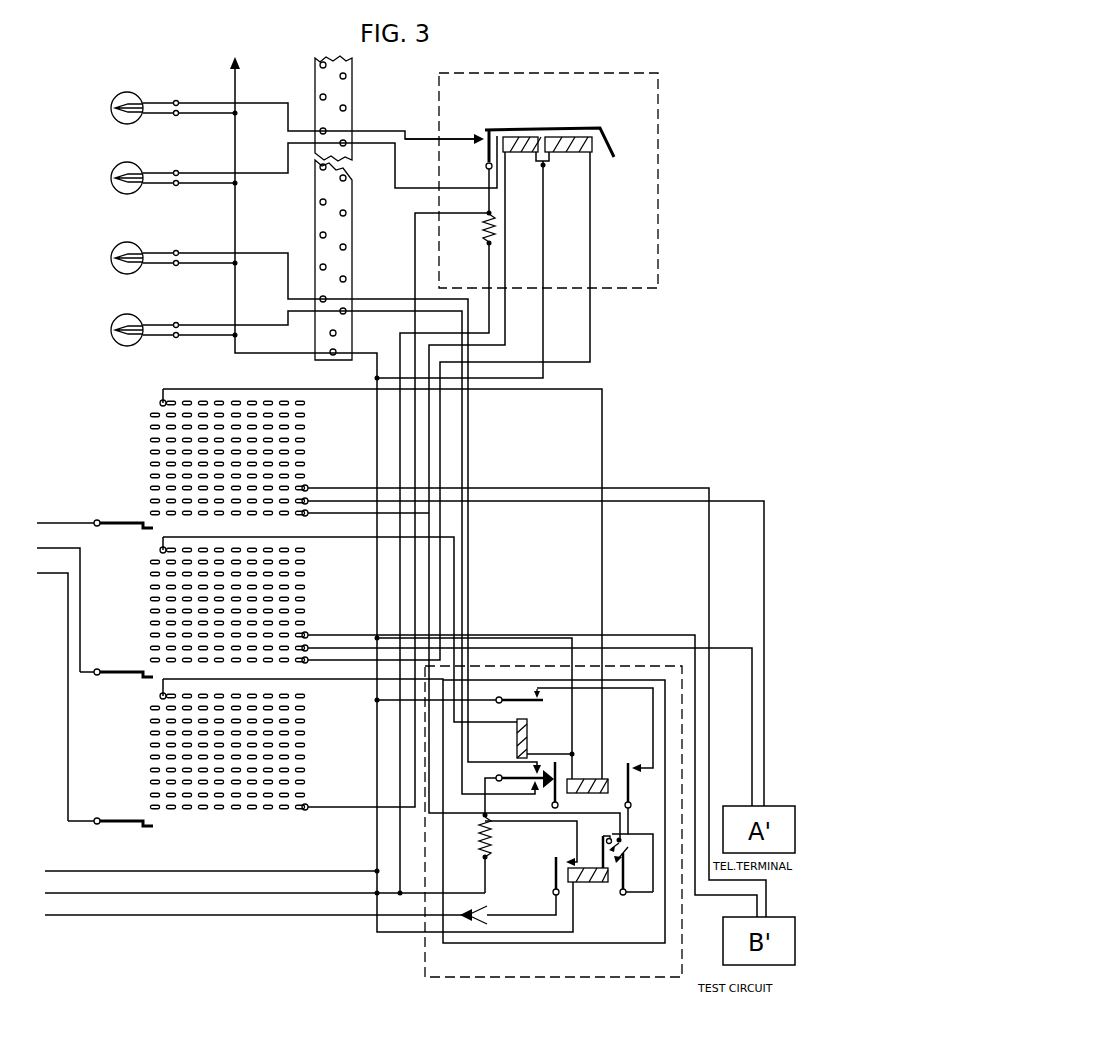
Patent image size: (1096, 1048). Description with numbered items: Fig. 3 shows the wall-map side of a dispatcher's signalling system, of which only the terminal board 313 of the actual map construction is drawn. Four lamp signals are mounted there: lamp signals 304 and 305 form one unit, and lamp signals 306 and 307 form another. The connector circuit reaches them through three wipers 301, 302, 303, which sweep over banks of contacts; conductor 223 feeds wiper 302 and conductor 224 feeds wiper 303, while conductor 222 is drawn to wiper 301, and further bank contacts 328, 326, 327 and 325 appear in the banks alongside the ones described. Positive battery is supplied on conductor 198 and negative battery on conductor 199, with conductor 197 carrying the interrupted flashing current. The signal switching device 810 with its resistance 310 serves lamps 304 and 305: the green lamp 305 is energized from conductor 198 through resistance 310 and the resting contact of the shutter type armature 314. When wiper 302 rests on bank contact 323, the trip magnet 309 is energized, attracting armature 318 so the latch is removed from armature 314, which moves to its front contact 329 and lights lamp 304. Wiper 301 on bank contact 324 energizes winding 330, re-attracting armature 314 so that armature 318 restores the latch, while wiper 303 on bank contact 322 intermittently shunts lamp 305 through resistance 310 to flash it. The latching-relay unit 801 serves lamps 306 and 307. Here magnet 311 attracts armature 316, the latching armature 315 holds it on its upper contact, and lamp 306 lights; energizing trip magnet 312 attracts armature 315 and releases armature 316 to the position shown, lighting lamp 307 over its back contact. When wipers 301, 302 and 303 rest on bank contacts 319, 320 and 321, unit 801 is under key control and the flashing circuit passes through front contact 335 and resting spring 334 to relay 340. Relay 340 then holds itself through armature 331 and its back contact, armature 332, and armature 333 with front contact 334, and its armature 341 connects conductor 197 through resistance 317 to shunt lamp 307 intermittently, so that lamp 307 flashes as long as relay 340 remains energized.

The lamp signal 304 is at (295, 108).
The lamp signal 305 is at (304, 165).
The lamp signal 306 is at (326, 499).
The lamp signal 307 is at (325, 547).
The terminal board 313 is at (353, 180).
The signal switching device 810 is at (548, 180).
The armature 318 is at (612, 144).
The front contact 329 is at (460, 137).
The shutter type armature 314 is at (485, 160).
The winding 330 is at (523, 157).
The trip magnet 309 is at (570, 157).
The resistance 310 is at (484, 230).
The bank contact 319 is at (160, 402).
The bank contact 320 is at (160, 549).
The bank contact 321 is at (160, 699).
The terminal 328 is at (308, 488).
The terminal 326 is at (308, 504).
The bank contact 324 is at (308, 516).
The terminal 327 is at (308, 634).
The terminal 325 is at (308, 650).
The bank contact 323 is at (308, 663).
The bank contact 322 is at (310, 811).
The conductor 222 is at (52, 521).
The conductor 223 is at (58, 601).
The conductor 224 is at (52, 688).
The wiper 301 is at (117, 521).
The wiper 302 is at (117, 670).
The wiper 303 is at (117, 819).
The lamp-signal control unit 801 is at (553, 824).
The armature 331 is at (515, 725).
The magnet 311 is at (529, 743).
The trip magnet 312 is at (587, 777).
The latching armature 315 is at (560, 800).
The armature 316 is at (510, 775).
The resistance 317 is at (492, 842).
The armature 332 is at (631, 805).
The front contact 335 is at (612, 830).
The resting spring 334 is at (631, 847).
The armature 333 is at (628, 891).
The relay 340 is at (591, 884).
The armature 341 is at (550, 870).
The conductor 199 is at (211, 862).
The conductor 198 is at (265, 885).
The conductor 197 is at (256, 907).